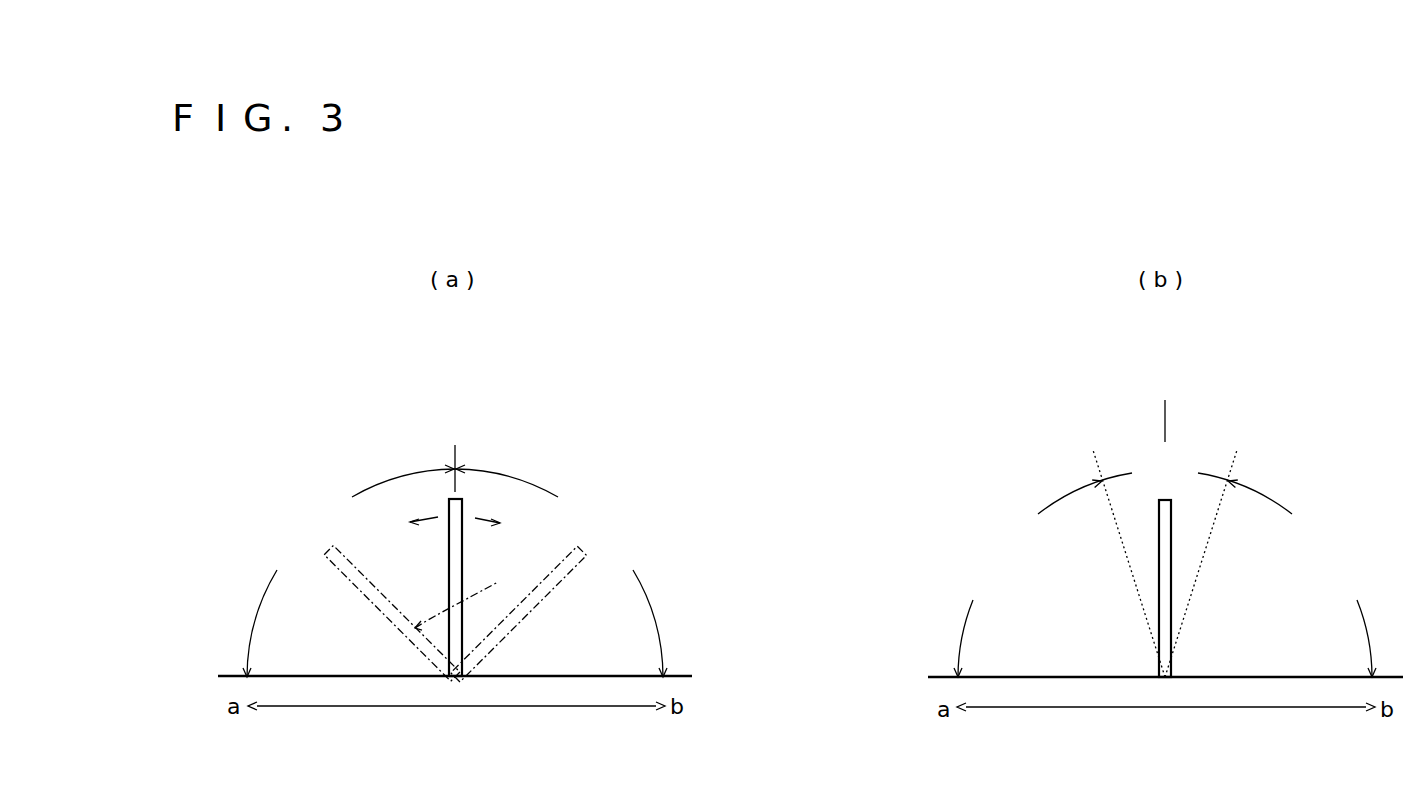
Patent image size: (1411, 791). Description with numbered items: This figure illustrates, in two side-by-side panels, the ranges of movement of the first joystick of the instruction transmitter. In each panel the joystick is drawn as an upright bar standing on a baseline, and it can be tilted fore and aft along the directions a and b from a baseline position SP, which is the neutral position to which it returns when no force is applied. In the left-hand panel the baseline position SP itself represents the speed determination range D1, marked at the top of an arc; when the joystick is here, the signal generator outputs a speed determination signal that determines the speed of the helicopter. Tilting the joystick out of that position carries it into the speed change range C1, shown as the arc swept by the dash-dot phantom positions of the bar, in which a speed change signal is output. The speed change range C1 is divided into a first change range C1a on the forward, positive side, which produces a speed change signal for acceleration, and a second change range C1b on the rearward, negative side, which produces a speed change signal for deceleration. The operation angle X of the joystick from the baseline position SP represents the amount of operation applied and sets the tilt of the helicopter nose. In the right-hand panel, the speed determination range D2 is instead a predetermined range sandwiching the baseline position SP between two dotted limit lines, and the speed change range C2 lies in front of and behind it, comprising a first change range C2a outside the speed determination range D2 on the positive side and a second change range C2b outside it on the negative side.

The speed change range C1 is at (355, 485).
The first change range C1a is at (351, 597).
The second change range C1b is at (559, 597).
The speed determination range D1 is at (467, 454).
The operation angle X is at (450, 527).
The baseline position SP is at (1165, 405).
The speed determination range D2 is at (1165, 563).
The speed change range C2 is at (1048, 497).
The first change range C2a is at (990, 605).
The second change range C2b is at (1339, 605).